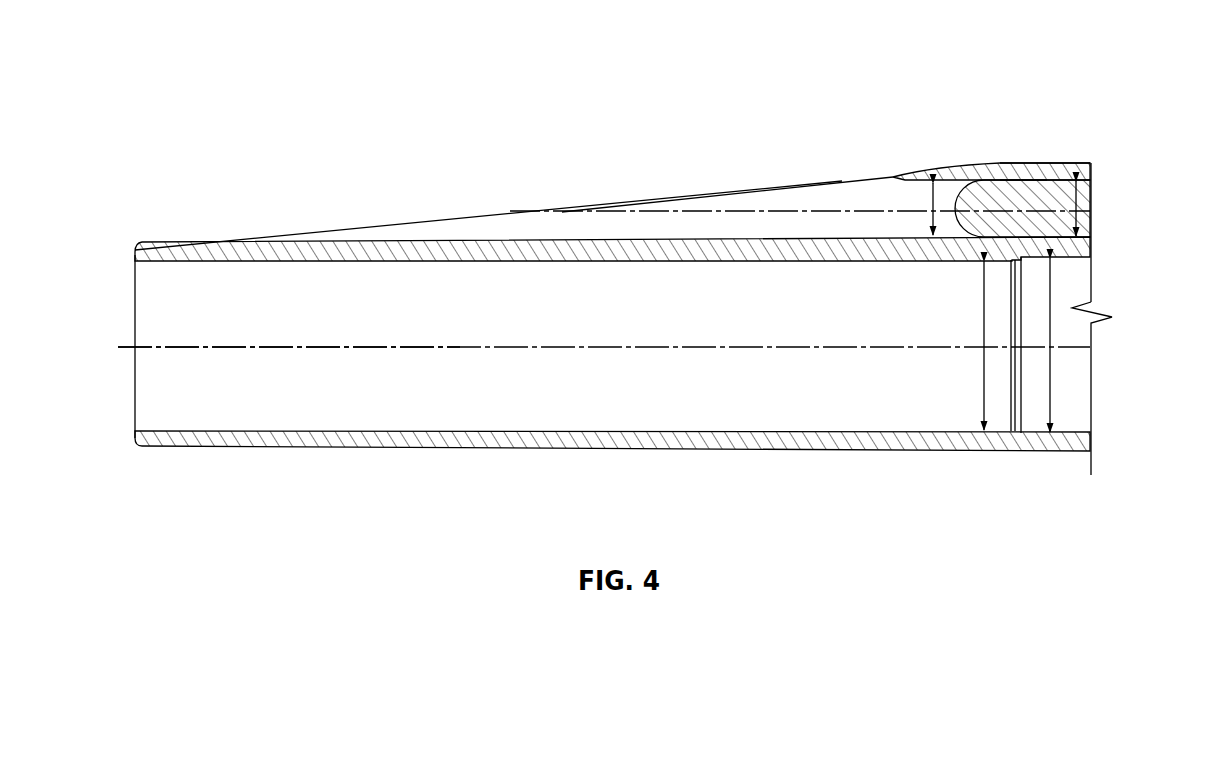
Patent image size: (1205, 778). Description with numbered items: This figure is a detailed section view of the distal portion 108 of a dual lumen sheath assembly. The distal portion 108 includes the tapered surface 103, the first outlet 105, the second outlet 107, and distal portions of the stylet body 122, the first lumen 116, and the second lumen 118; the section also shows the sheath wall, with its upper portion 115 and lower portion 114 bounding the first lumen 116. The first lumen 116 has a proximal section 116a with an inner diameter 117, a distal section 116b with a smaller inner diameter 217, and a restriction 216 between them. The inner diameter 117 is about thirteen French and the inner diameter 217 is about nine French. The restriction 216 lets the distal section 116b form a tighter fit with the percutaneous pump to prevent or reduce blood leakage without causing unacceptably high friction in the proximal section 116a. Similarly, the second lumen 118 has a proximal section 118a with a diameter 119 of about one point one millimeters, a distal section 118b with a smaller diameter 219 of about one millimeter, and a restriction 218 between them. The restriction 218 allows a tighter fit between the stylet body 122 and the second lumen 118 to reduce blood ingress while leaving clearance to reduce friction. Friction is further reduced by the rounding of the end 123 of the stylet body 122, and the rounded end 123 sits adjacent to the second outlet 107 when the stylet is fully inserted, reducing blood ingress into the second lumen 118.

The distal portion 108 is at (284, 44).
The first outlet 105 is at (150, 404).
The upper tube wall 115 is at (852, 235).
The lower tube wall 114 is at (745, 422).
The tapered surface 103 is at (679, 198).
The second outlet 107 is at (737, 207).
The distal section 118b is at (808, 217).
The second lumen 118 is at (903, 205).
The proximal section 118a is at (1038, 172).
The stylet body 122 is at (1053, 180).
The restriction 218 is at (1047, 190).
The diameter 219 is at (941, 180).
The end 123 is at (965, 232).
The diameter 119 is at (1094, 194).
The proximal section 116a is at (1072, 387).
The inner diameter 217 is at (983, 375).
The inner diameter 117 is at (1052, 390).
The restriction 216 is at (1010, 428).
The first lumen 116 is at (462, 322).
The distal section 116b is at (323, 325).